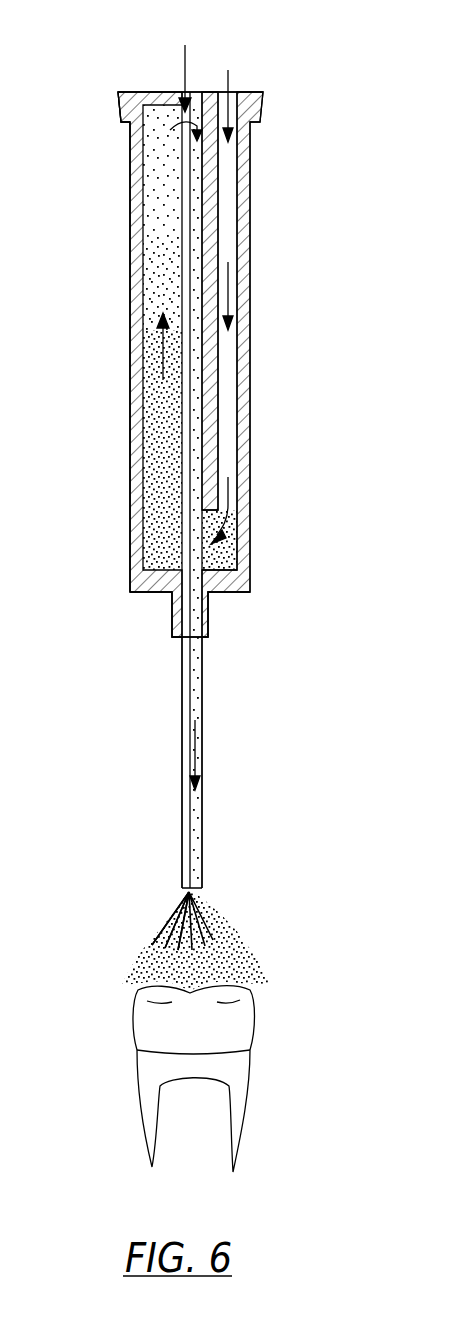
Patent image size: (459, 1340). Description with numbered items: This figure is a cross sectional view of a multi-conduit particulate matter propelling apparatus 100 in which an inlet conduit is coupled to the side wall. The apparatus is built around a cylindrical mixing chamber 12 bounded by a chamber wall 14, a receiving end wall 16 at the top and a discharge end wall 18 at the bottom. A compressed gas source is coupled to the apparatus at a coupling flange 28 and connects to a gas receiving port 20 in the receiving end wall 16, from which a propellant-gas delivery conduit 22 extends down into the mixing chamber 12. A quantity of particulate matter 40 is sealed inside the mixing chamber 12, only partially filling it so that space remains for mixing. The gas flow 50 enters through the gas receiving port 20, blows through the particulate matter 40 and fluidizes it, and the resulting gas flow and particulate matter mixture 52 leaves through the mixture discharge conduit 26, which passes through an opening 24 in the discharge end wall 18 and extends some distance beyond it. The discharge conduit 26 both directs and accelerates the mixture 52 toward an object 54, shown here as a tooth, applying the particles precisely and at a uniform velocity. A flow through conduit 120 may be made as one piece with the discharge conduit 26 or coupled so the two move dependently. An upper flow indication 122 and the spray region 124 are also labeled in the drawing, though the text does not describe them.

The mixing chamber 12 is at (146, 194).
The chamber wall 14 is at (132, 250).
The receiving end wall 16 is at (160, 92).
The discharge end wall 18 is at (157, 591).
The gas receiving port 20 is at (233, 93).
The propellant-gas delivery conduit 22 is at (232, 218).
The opening 24 is at (181, 563).
The mixture discharge conduit 26 is at (197, 370).
The coupling flange 28 is at (120, 108).
The particulate matter 40 is at (173, 435).
The gas flow 50 is at (232, 298).
The gas flow and particulate matter mixture 52 is at (158, 162).
The object 54 is at (237, 1022).
The multi-conduit particulate matter propelling apparatus 100 is at (359, 586).
The flow through conduit 120 is at (187, 742).
The vibration/gas input 122 is at (190, 88).
The spray pattern 124 is at (168, 920).